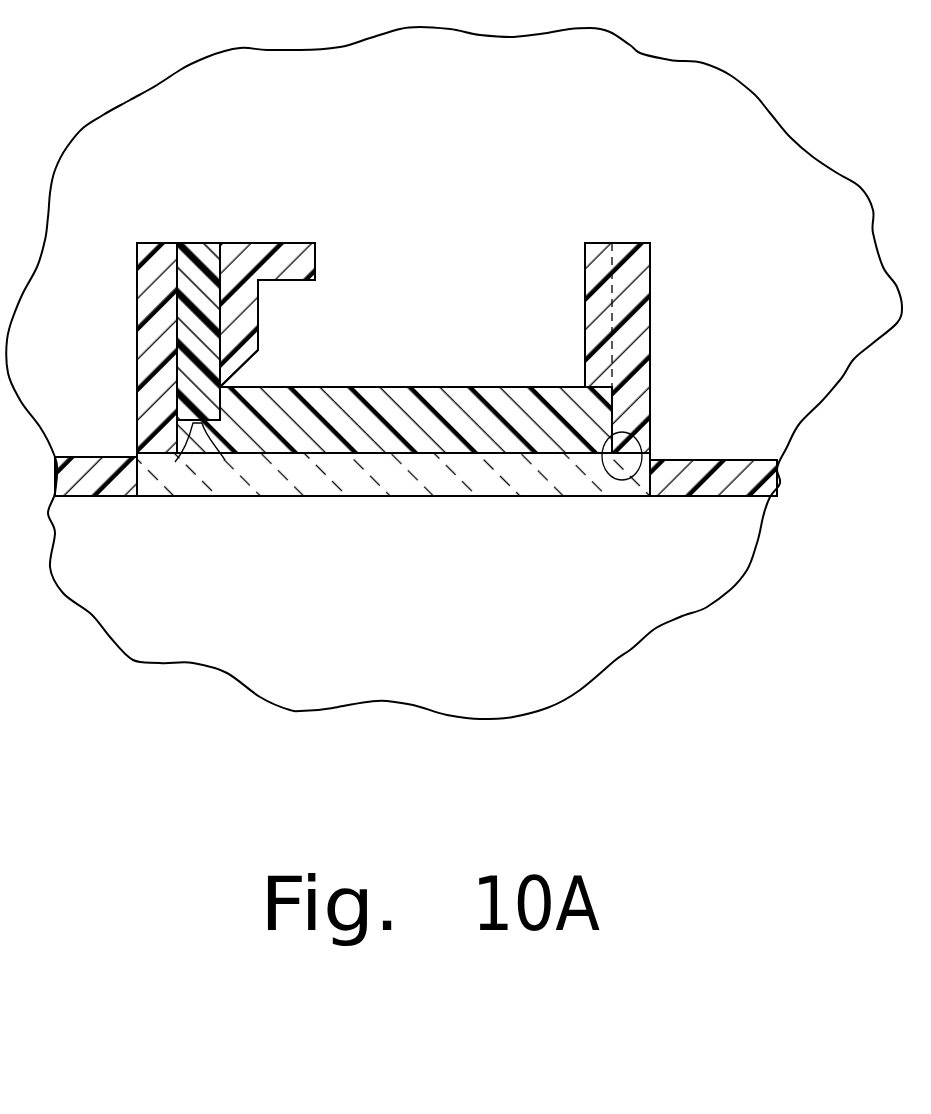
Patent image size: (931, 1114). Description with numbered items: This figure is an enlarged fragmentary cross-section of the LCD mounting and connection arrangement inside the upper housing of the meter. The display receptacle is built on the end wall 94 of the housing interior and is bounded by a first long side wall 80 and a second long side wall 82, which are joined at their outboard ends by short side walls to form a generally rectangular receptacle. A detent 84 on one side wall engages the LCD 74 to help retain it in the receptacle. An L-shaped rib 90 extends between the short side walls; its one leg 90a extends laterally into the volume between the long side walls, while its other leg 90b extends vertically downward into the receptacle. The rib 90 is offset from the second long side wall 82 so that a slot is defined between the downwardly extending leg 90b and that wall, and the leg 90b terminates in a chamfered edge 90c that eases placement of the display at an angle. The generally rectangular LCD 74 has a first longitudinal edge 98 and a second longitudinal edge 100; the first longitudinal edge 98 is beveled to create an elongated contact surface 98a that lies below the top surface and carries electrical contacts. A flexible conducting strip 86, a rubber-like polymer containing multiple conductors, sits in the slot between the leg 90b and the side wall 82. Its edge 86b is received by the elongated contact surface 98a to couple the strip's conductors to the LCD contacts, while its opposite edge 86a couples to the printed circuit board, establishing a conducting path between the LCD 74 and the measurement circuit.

The LCD 74 is at (432, 388).
The first long side wall 80 is at (650, 310).
The second long side wall 82 is at (137, 378).
The detent 84 is at (585, 283).
The flexible conducting strip 86 is at (183, 305).
The edge of conducting strip 86a is at (197, 243).
The edge of conducting strip 86b is at (175, 462).
The L-shaped rib 90 is at (246, 222).
The leg of L-shaped rib 90a is at (302, 243).
The leg of L-shaped rib 90b is at (258, 318).
The chamfered edge 90c is at (243, 362).
The end wall 94 is at (705, 460).
The first longitudinal edge 98 is at (137, 478).
The elongated contact surface 98a is at (225, 460).
The second longitudinal edge 100 is at (620, 480).